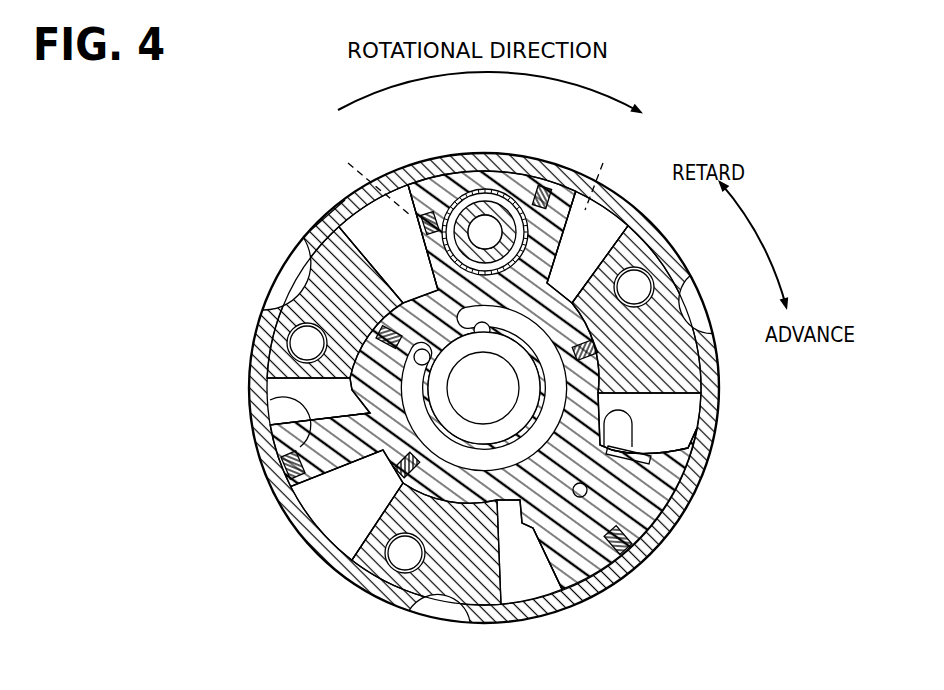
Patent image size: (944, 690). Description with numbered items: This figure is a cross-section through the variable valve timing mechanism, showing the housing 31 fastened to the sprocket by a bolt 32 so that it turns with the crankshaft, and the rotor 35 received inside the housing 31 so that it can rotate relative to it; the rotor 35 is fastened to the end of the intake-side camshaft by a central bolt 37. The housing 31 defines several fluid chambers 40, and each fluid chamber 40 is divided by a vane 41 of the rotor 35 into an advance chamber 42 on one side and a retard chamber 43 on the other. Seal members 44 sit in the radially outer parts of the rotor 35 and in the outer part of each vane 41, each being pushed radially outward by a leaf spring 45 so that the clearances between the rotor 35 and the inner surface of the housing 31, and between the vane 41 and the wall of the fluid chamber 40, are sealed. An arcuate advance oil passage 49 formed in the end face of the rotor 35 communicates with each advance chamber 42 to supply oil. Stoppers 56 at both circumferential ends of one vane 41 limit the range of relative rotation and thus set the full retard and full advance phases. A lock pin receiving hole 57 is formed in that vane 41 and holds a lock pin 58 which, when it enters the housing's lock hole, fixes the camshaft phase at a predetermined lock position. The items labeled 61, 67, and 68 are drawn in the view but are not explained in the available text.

The housing 31 is at (250, 328).
The bolt 32 is at (640, 283).
The rotor 35 is at (640, 369).
The bolt 37 is at (488, 386).
The fluid chamber 40 is at (389, 234).
The vane 41 is at (428, 212).
The advance chamber 42 is at (345, 210).
The retard chamber 43 is at (598, 238).
The seal member 44 is at (303, 235).
The leaf spring 45 is at (305, 277).
The arcuate advance oil passage 49 is at (474, 464).
The stopper 56 is at (648, 452).
The lock pin receiving hole 57 is at (465, 205).
The lock pin 58 is at (490, 198).
The lock pin spring 61 is at (520, 185).
The advance passage 67 is at (361, 175).
The retard passage 68 is at (603, 172).